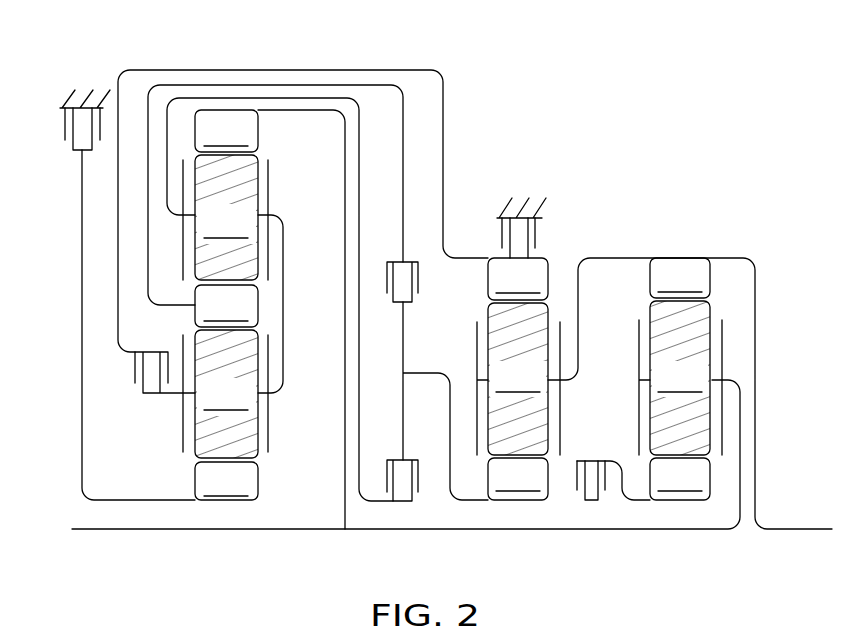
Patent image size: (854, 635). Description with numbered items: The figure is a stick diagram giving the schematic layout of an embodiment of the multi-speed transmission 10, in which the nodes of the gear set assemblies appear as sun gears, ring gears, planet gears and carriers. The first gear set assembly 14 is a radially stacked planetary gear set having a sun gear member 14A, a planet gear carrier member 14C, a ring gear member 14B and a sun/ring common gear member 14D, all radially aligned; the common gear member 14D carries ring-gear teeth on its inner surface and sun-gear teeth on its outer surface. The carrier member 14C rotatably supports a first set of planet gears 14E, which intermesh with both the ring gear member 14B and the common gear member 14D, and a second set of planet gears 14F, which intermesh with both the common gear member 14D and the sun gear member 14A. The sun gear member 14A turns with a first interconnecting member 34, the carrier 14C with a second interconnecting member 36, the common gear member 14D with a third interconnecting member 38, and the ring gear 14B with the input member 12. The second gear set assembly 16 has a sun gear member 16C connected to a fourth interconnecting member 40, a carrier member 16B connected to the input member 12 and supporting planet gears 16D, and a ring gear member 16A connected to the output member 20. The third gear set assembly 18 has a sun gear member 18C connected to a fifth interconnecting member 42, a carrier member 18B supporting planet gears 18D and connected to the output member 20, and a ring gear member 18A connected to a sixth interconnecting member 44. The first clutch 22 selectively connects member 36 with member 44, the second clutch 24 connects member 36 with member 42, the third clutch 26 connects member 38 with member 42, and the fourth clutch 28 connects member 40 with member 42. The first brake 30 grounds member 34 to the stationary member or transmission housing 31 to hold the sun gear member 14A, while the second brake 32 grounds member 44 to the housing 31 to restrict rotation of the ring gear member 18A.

The multi-speed transmission 10 is at (724, 100).
The input shaft or member 12 is at (84, 532).
The first gear set assembly 14 is at (264, 345).
The sun gear member 14A is at (226, 481).
The ring gear member 14B is at (226, 131).
The planet gear carrier member 14C is at (269, 175).
The sun/ring common gear member 14D is at (226, 306).
The first set of planet or pinion gears 14E is at (226, 217).
The second set of planet or pinion gears 14F is at (226, 394).
The second gear set assembly 16 is at (724, 419).
The ring gear member 16A is at (680, 278).
The planet gear carrier member 16B is at (722, 352).
The sun gear member 16C is at (680, 479).
The planet or pinion gears 16D is at (680, 378).
The third gear set assembly 18 is at (492, 419).
The ring gear member 18A is at (518, 279).
The planet gear carrier member 18B is at (477, 345).
The sun gear member 18C is at (518, 479).
The planet or pinion gears 18D is at (518, 379).
The output shaft or member 20 is at (610, 256).
The first clutch 22 is at (135, 370).
The second clutch 24 is at (387, 470).
The third clutch 26 is at (387, 277).
The fourth clutch 28 is at (607, 485).
The first brake 30 is at (65, 123).
The stationary member or transmission housing 31 is at (66, 100).
The second brake 32 is at (502, 232).
The first shaft or interconnecting member 34 is at (82, 292).
The second shaft or interconnecting member 36 is at (275, 98).
The third shaft or interconnecting member 38 is at (218, 85).
The fourth shaft or interconnecting member 40 is at (598, 460).
The fifth shaft or interconnecting member 42 is at (432, 372).
The sixth shaft or interconnecting member 44 is at (172, 70).